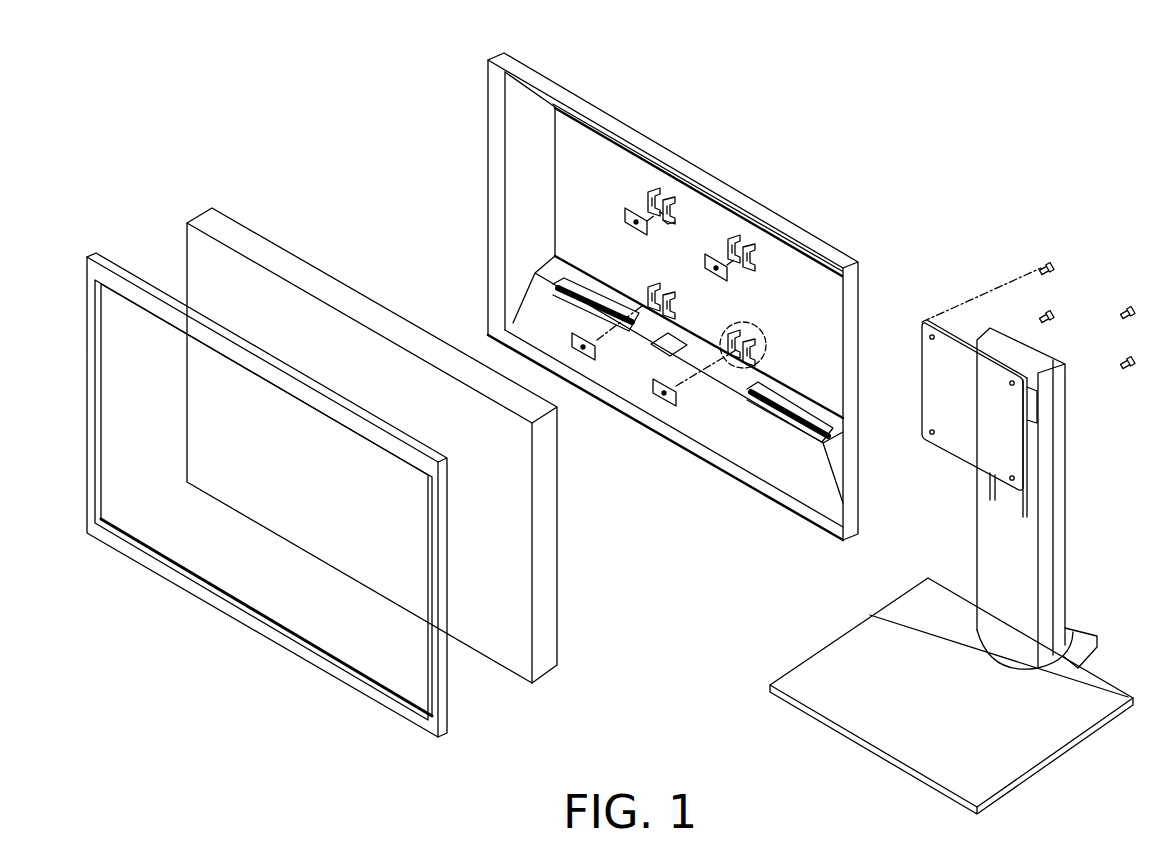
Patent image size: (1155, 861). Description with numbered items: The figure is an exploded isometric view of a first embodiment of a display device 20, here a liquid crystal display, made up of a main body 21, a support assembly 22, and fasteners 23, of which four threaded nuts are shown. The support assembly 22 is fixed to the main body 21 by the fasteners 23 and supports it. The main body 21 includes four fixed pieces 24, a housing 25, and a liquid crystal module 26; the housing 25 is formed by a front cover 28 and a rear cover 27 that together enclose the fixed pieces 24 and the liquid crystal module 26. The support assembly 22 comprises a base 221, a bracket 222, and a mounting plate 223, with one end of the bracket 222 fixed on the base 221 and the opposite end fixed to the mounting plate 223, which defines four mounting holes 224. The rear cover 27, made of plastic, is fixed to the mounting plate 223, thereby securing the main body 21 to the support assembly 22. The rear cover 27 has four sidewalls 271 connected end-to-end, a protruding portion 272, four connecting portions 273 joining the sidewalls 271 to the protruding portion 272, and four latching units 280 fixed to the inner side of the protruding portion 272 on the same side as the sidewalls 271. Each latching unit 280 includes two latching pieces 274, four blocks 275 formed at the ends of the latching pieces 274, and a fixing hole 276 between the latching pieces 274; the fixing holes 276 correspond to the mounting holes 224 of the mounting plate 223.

The display device 20 is at (602, 408).
The main body 21 is at (510, 32).
The support assembly 22 is at (1070, 463).
The fastener 23 is at (1052, 272).
The fixed piece 24 is at (663, 402).
The housing 25 is at (800, 568).
The liquid crystal module 26 is at (322, 542).
The rear cover 27 is at (796, 528).
The front cover 28 is at (437, 727).
The base 221 is at (1023, 743).
The bracket 222 is at (1062, 490).
The mounting plate 223 is at (1010, 433).
The mounting hole 224 is at (932, 334).
The sidewall 271 is at (498, 243).
The protruding portion 272 is at (610, 165).
The connecting portion 273 is at (518, 165).
The latching piece 274 is at (675, 210).
The block 275 is at (653, 190).
The fixing hole 276 is at (670, 193).
The latching unit 280 is at (765, 153).